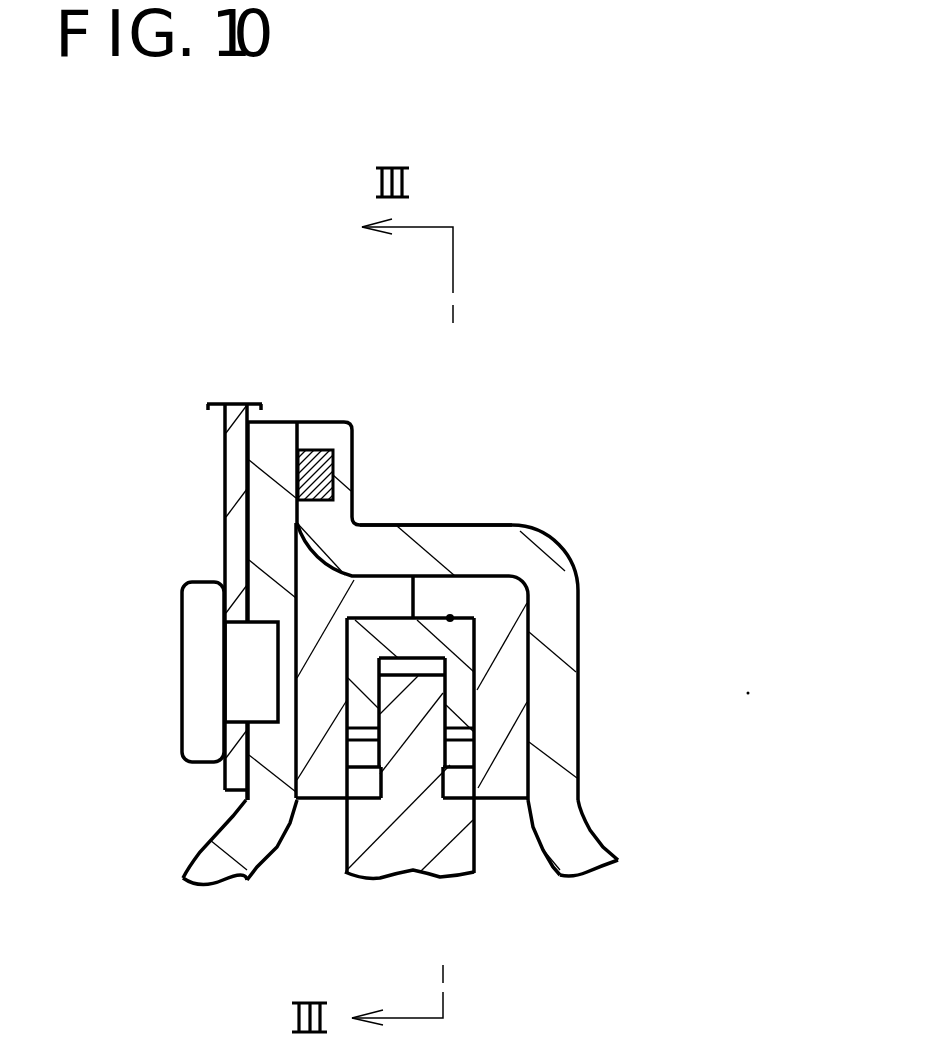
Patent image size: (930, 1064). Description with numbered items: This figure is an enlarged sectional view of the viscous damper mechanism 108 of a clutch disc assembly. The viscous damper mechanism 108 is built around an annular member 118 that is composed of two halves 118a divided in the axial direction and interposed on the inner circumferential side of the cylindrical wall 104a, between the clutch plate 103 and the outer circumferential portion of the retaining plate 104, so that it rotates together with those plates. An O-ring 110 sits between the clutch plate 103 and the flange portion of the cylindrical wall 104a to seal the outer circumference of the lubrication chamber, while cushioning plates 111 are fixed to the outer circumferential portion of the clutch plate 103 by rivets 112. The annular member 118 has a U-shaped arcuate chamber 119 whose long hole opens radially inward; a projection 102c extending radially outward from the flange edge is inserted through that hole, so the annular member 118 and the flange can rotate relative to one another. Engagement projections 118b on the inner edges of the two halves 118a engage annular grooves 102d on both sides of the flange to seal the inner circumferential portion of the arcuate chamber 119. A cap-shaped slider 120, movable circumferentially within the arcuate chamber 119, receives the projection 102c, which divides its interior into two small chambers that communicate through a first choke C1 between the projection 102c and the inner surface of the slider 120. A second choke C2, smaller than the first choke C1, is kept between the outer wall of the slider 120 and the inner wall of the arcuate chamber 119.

The clutch plate 103 is at (237, 829).
The retaining plate 104 is at (548, 787).
The cylindrical wall 104a is at (507, 550).
The viscous damper mechanism 108 is at (542, 625).
The O-ring 110 is at (312, 462).
The cushioning plate 111 is at (237, 460).
The rivet 112 is at (243, 683).
The annular member 118 is at (557, 427).
The halves of annular member 118a is at (512, 475).
The engagement projection 118b is at (286, 918).
The arcuate chamber 119 is at (362, 706).
The slider 120 is at (365, 652).
The projection 102c is at (417, 704).
The annular groove 102d is at (363, 778).
The first choke C1 is at (427, 668).
The second choke C2 is at (452, 619).